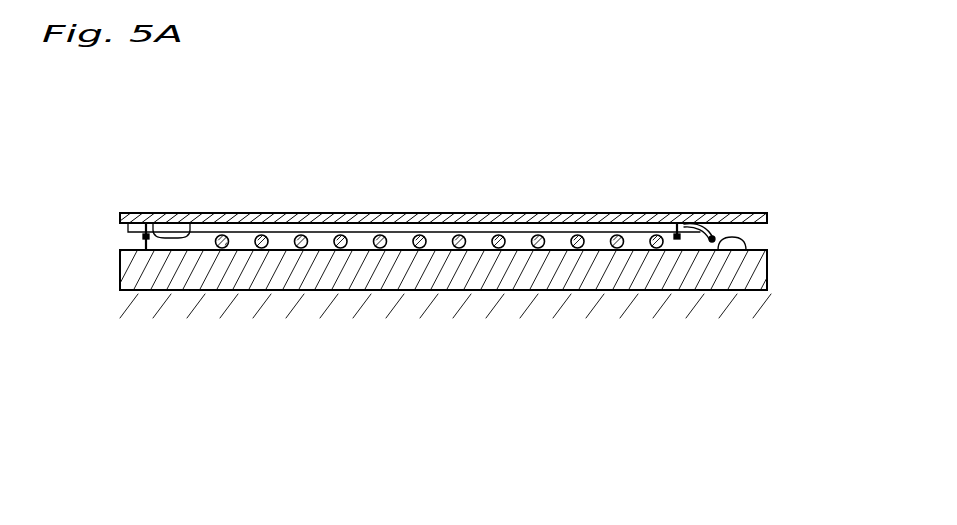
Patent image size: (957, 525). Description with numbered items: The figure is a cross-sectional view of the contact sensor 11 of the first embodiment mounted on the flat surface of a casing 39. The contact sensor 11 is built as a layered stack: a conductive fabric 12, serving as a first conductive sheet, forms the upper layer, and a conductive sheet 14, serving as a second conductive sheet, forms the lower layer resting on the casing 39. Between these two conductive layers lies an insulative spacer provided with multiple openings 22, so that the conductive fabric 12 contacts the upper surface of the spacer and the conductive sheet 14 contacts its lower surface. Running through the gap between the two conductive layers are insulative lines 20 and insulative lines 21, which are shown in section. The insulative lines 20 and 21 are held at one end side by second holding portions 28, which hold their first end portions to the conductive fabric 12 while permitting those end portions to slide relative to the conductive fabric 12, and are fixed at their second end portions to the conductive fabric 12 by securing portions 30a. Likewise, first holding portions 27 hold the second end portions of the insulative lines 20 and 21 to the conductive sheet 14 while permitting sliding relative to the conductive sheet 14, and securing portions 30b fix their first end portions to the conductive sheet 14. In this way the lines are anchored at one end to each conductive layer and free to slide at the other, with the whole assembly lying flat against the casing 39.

The contact sensor 11 is at (74, 154).
The conductive fabric 12 is at (585, 213).
The conductive sheet 14 is at (118, 277).
The insulative lines 20 is at (413, 232).
The insulative lines 21 is at (498, 235).
The openings 22 is at (438, 250).
The first holding portions 27 is at (142, 246).
The second holding portions 28 is at (717, 225).
The securing portions 30a is at (180, 213).
The securing portions 30b is at (737, 238).
The casing 39 is at (717, 302).